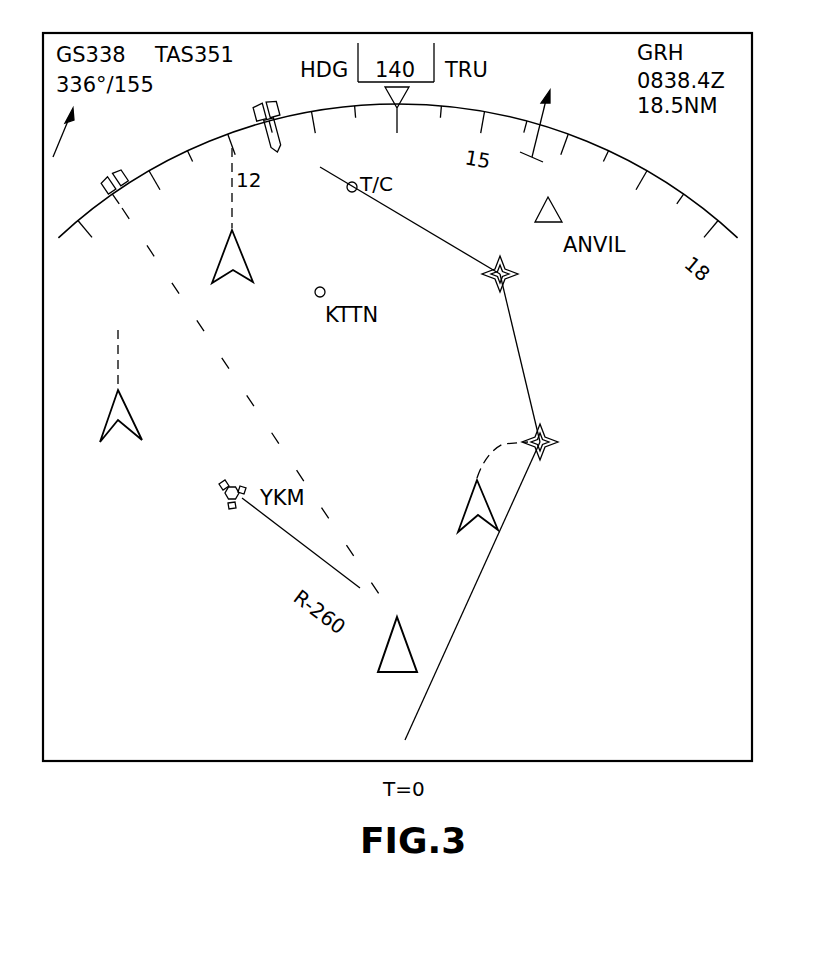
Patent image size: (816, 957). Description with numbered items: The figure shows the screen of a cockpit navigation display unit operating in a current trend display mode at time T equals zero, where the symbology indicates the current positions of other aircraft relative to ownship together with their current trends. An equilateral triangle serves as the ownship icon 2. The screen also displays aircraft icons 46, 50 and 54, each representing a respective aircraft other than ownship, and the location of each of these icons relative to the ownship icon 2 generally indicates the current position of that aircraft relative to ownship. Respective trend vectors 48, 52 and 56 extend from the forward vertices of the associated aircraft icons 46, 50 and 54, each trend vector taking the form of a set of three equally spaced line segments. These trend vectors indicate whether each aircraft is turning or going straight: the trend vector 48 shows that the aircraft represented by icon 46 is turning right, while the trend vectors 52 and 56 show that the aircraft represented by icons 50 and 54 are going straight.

The ownship icon 2 is at (386, 642).
The aircraft icon 46 is at (475, 500).
The trend vector 48 is at (487, 449).
The aircraft icon 50 is at (128, 408).
The trend vector 52 is at (118, 360).
The aircraft icon 54 is at (237, 250).
The trend vector 56 is at (231, 207).